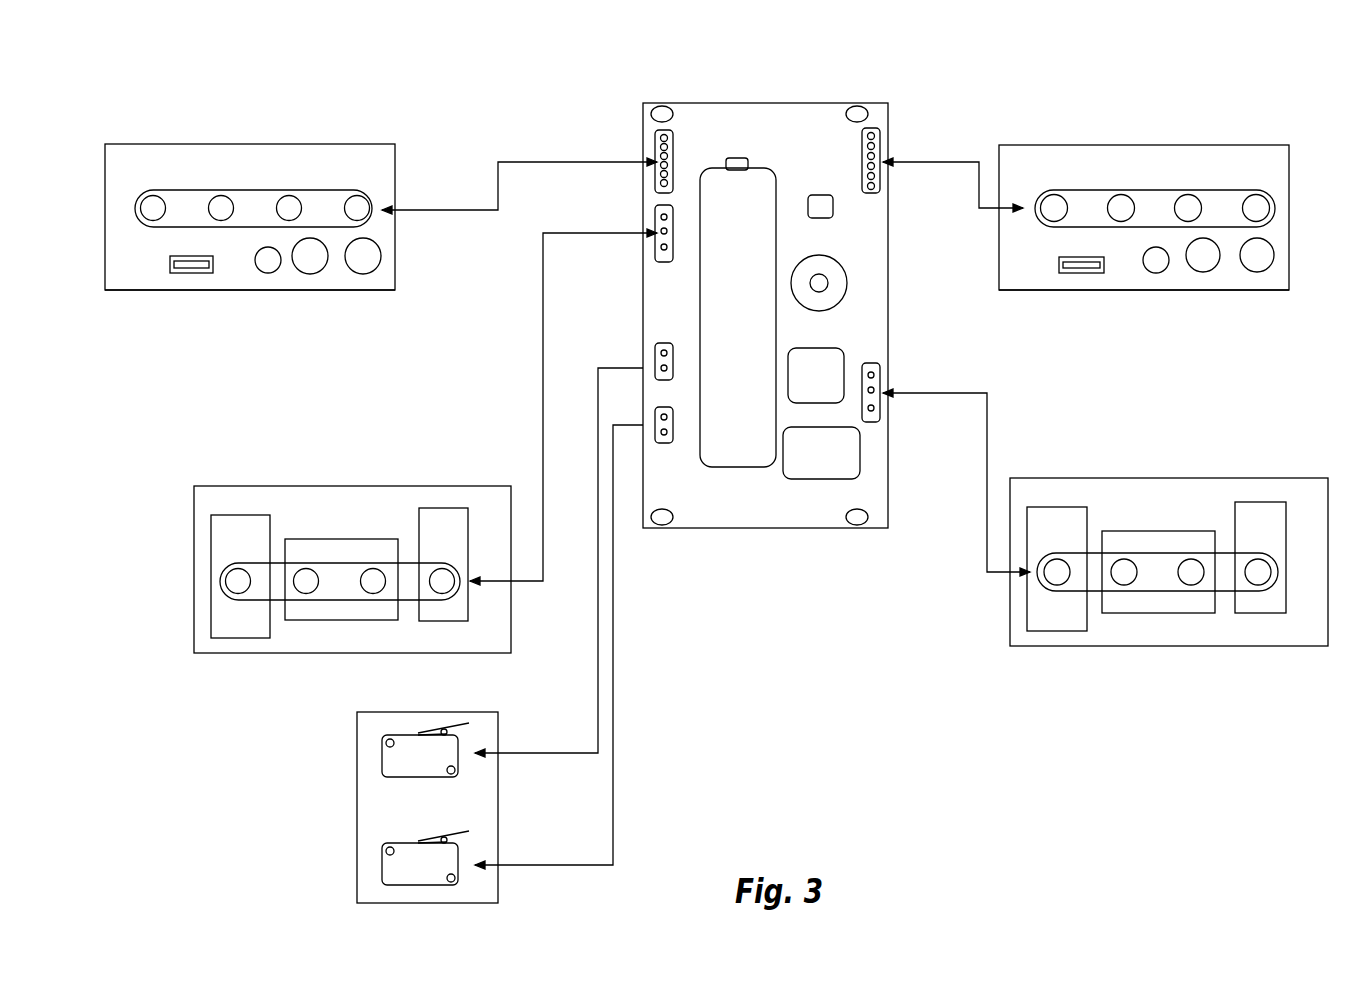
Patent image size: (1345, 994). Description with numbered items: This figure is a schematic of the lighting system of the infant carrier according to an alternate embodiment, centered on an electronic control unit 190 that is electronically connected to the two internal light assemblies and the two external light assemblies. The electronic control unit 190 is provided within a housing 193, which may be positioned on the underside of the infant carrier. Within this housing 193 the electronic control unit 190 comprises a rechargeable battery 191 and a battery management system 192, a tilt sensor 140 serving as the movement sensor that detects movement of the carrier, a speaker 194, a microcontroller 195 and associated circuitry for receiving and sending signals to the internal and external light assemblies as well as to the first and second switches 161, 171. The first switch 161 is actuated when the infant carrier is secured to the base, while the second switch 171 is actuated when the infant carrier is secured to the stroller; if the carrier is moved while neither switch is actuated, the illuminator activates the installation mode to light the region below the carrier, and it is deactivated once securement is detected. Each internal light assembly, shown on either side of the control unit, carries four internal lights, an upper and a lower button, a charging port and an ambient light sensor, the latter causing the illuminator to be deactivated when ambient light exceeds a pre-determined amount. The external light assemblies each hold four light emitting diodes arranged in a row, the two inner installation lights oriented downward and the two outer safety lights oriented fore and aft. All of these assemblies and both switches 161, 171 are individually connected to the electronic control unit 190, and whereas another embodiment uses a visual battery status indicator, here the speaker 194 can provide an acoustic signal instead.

The tilt sensor 140 is at (823, 203).
The first switch 161 is at (395, 760).
The second switch 171 is at (395, 863).
The electronic control unit 190 is at (817, 83).
The rechargeable battery 191 is at (726, 160).
The battery management system 192 is at (847, 455).
The housing 193 is at (737, 103).
The speaker 194 is at (847, 275).
The microcontroller 195 is at (832, 362).